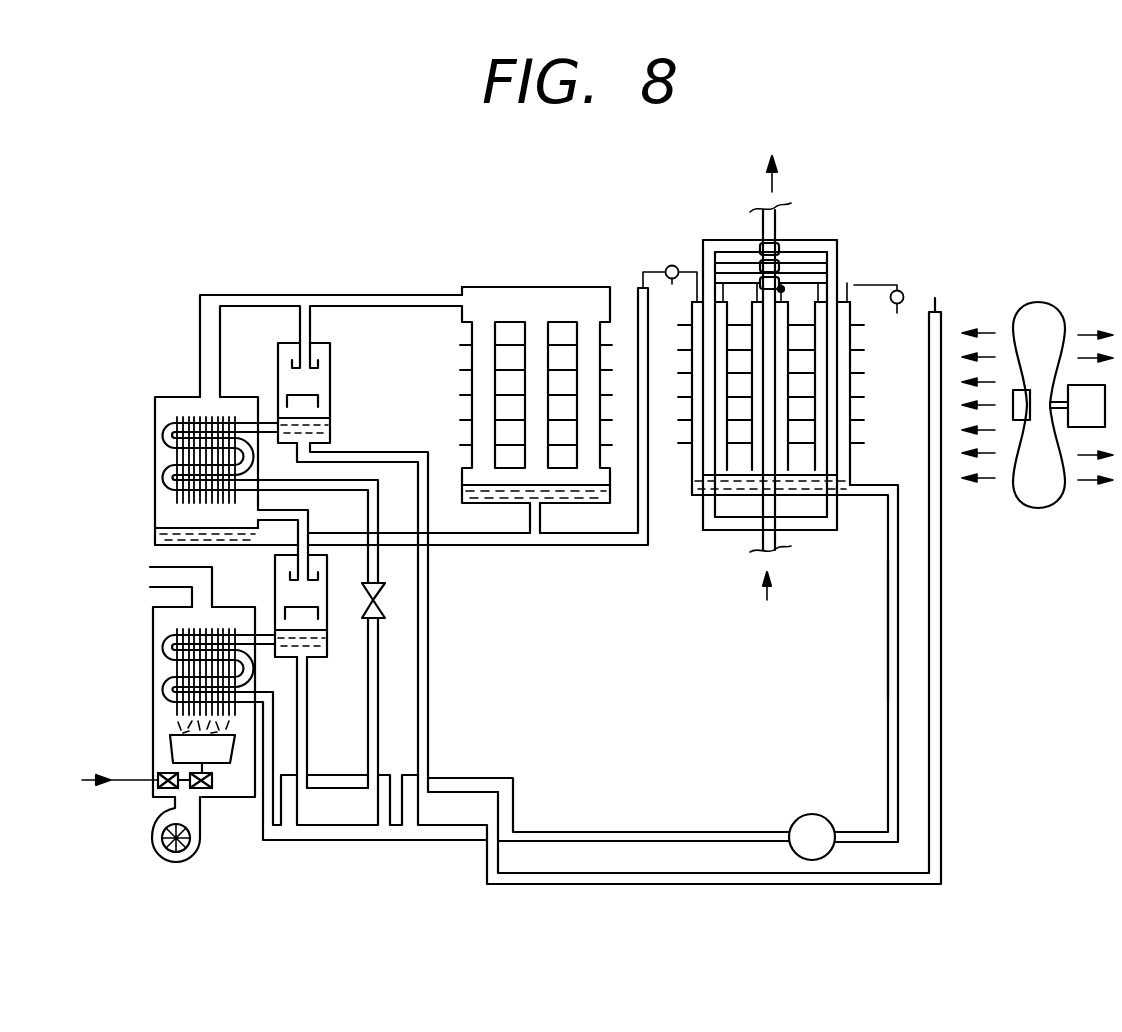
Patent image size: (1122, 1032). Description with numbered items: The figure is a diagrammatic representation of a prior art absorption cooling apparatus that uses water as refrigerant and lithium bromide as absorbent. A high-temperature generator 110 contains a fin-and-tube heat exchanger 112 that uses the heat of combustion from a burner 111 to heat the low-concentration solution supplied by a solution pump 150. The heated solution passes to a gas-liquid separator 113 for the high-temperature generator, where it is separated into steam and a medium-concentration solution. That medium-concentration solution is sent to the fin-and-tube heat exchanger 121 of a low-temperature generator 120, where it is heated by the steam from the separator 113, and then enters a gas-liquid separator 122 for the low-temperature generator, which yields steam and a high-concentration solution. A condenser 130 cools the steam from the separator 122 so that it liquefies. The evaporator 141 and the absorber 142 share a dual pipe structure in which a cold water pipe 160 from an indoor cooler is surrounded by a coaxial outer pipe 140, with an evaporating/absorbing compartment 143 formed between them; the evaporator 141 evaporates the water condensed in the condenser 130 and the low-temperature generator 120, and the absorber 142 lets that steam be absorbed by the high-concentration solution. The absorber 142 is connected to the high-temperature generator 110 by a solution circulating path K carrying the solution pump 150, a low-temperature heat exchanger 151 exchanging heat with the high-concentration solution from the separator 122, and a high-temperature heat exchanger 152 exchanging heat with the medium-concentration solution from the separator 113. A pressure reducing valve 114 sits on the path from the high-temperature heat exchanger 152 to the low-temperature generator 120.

The high-temperature generator 110 is at (153, 620).
The burner 111 is at (172, 748).
The fin-and-tube heat exchanger 112 is at (165, 680).
The gas-liquid separator for high-temperature generator 113 is at (275, 556).
The pressure reducing valve 114 is at (386, 606).
The low-temperature generator 120 is at (155, 406).
The fin-and-tube heat exchanger 121 is at (160, 446).
The gas-liquid separator for low-temperature generator 122 is at (330, 354).
The condenser 130 is at (537, 287).
The outer pipe 140 is at (688, 466).
The evaporator 141 is at (698, 263).
The absorber 142 is at (852, 287).
The evaporating/absorbing compartment 143 is at (845, 330).
The solution pump 150 is at (797, 818).
The low-temperature heat exchanger 151 is at (478, 790).
The high-temperature heat exchanger 152 is at (330, 776).
The cold water pipe 160 is at (783, 547).
The solution circulating path K is at (888, 683).